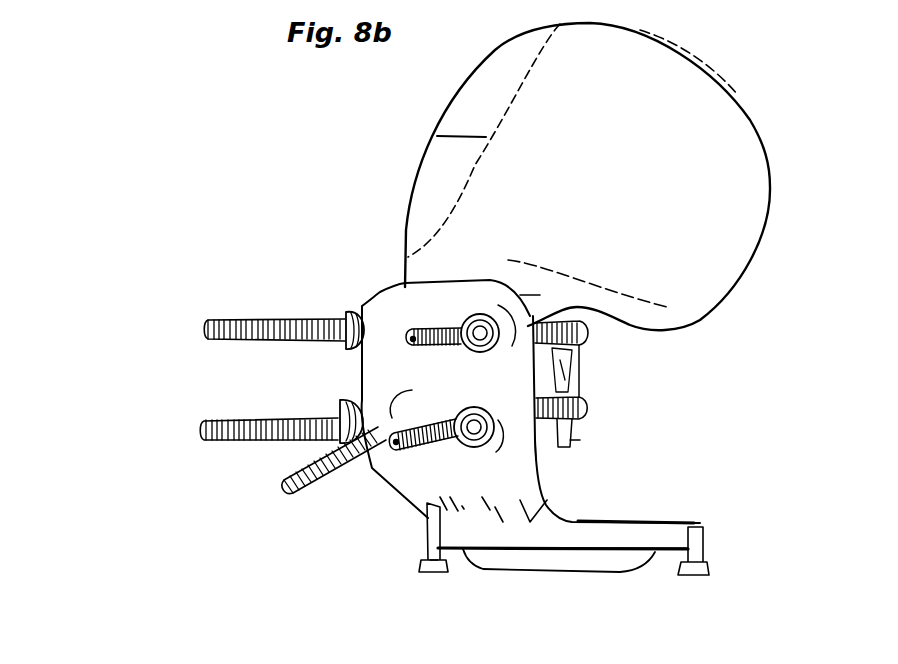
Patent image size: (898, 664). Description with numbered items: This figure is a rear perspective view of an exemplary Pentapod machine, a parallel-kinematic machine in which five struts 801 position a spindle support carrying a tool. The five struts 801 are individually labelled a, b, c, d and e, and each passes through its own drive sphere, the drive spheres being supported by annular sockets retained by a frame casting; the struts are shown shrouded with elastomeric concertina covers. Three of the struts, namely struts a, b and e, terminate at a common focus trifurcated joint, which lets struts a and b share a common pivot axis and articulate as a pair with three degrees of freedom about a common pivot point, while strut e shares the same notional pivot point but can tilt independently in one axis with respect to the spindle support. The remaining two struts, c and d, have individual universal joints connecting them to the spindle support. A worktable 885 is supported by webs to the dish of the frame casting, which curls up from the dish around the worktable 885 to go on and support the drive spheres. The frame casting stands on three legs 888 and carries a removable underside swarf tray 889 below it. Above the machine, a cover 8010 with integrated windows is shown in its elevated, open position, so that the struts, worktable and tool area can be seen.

The struts 801 is at (102, 375).
The strut a is at (407, 337).
The strut b is at (268, 322).
The strut c is at (340, 403).
The strut d is at (243, 420).
The strut e is at (336, 442).
The worktable 885 is at (768, 0).
The cover 8010 is at (688, 235).
The legs 888 is at (425, 567).
The swarf tray 889 is at (555, 558).